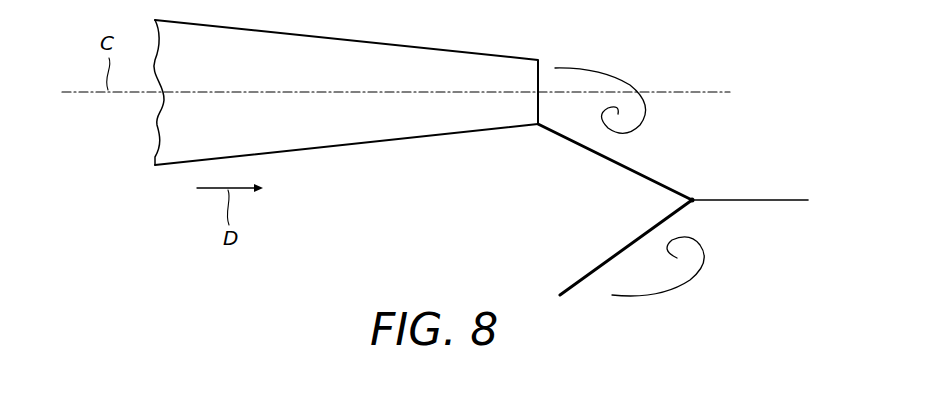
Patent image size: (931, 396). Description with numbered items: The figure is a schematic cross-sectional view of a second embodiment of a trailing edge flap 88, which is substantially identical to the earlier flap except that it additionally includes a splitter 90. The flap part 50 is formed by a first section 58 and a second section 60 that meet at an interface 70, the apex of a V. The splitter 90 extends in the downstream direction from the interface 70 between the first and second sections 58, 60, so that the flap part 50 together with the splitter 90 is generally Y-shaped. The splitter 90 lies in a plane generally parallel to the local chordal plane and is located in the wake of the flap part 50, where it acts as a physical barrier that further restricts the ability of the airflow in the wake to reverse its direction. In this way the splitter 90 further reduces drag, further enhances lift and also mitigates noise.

The flap part 50 is at (550, 236).
The first section 58 is at (568, 143).
The second section 60 is at (620, 248).
The interface 70 is at (695, 197).
The trailing edge flap 88 is at (486, 190).
The splitter 90 is at (763, 202).